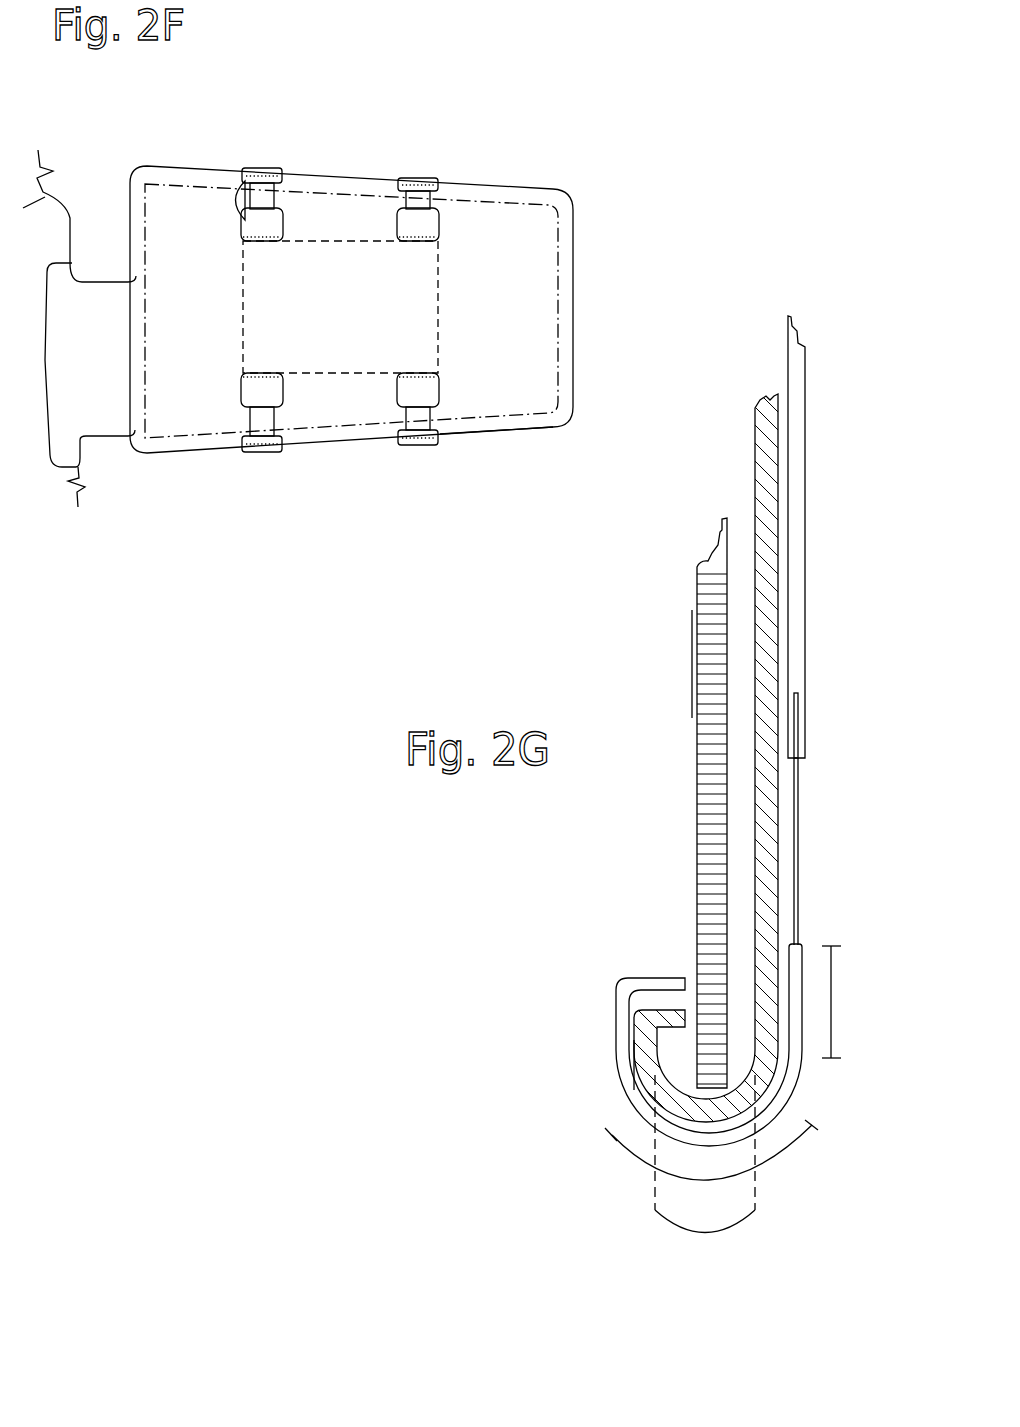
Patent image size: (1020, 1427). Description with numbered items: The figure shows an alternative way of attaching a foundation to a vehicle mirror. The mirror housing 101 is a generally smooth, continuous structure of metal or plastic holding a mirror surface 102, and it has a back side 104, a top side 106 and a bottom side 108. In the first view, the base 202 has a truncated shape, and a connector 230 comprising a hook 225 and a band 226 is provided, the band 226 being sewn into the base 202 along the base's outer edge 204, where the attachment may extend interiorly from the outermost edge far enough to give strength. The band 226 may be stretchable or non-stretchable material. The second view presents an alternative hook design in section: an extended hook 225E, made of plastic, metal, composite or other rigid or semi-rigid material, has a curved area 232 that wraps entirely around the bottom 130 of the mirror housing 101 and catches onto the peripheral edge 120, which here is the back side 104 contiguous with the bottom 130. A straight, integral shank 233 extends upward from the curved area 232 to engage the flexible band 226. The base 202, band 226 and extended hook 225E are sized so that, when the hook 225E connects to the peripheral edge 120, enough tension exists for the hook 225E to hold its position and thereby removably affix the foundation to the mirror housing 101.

In FIG. 2F, the mirror housing 101 is at (612, 230).
In FIG. 2G, the mirror housing 101 is at (762, 417).
In FIG. 2G, the mirror surface 102 is at (707, 571).
In FIG. 2G, the back side 104 is at (692, 663).
In FIG. 2F, the top side 106 is at (333, 178).
In FIG. 2F, the bottom side 108 is at (478, 433).
In FIG. 2G, the peripheral edge 120 is at (642, 1058).
In FIG. 2G, the bottom 130 is at (704, 1240).
In FIG. 2F, the base 202 is at (348, 358).
In FIG. 2G, the base 202 is at (812, 570).
In FIG. 2F, the outer edge 204 is at (440, 310).
In FIG. 2G, the outer edge 204 is at (815, 690).
In FIG. 2F, the hook 225 is at (423, 182).
In FIG. 2G, the extended hook 225E is at (810, 950).
In FIG. 2F, the band 226 is at (428, 223).
In FIG. 2G, the band 226 is at (805, 843).
In FIG. 2F, the connector 230 is at (236, 196).
In FIG. 2G, the curved area 232 is at (704, 1177).
In FIG. 2G, the shank 233 is at (835, 1012).